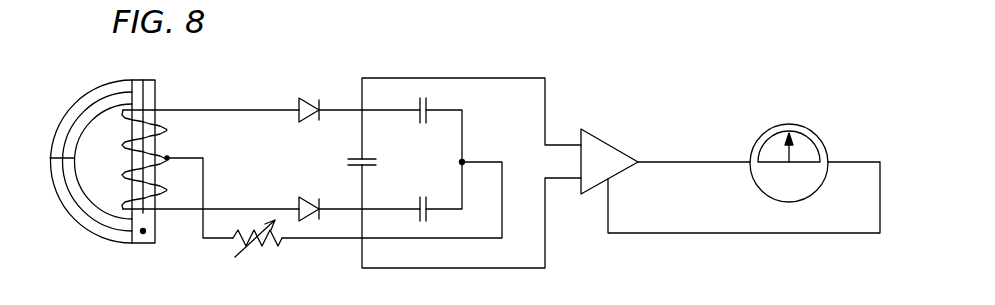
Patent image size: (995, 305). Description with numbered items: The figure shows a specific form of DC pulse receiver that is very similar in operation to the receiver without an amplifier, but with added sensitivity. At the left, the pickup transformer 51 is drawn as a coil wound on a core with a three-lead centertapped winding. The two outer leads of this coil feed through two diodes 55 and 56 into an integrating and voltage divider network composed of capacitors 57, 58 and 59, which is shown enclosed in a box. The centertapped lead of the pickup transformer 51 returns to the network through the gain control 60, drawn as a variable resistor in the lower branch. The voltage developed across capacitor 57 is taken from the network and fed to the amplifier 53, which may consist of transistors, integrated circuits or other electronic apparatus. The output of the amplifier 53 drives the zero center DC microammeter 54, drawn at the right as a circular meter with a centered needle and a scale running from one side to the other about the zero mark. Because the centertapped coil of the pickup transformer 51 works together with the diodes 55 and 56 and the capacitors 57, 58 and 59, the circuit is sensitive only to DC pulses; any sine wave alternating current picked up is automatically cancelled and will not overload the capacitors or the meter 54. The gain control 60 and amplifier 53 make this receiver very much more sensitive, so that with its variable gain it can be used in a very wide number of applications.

The pickup transformer 51 is at (152, 78).
The amplifier 53 is at (600, 145).
The zero center DC microammeter 54 is at (821, 190).
The diode 55 is at (300, 99).
The diode 56 is at (301, 200).
The capacitor 57 is at (372, 158).
The capacitor 58 is at (428, 102).
The capacitor 59 is at (428, 216).
The gain control 60 is at (272, 246).